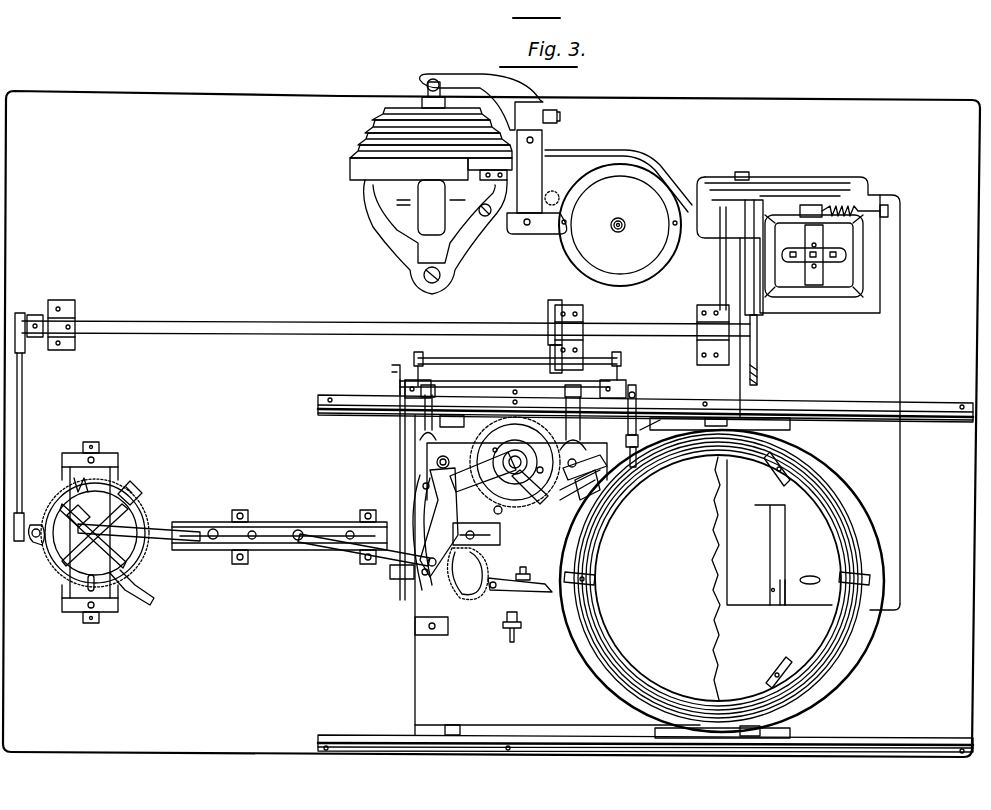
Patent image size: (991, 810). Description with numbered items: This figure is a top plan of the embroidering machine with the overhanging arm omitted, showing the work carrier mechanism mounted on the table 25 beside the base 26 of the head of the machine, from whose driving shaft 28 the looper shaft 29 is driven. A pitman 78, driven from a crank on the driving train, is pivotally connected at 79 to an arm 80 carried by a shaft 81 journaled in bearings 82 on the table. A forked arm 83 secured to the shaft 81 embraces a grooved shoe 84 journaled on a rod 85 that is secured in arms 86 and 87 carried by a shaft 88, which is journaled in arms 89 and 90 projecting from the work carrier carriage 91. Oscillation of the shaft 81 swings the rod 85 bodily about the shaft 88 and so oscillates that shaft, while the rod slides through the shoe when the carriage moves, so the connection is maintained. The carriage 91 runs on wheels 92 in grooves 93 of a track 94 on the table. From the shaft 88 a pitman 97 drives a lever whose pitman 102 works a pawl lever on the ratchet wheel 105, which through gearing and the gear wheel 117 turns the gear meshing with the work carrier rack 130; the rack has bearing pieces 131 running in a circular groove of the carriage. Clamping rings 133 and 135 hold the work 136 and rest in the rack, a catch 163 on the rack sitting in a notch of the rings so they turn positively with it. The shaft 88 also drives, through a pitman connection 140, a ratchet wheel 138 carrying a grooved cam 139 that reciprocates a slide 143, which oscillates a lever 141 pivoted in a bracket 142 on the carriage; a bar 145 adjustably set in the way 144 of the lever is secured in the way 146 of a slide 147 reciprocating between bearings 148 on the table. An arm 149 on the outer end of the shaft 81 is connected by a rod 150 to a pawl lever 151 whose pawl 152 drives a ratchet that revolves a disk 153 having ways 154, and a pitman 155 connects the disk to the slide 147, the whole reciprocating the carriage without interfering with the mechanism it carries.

The table 25 is at (491, 424).
The base of the head 26 is at (798, 297).
The driving shaft 28 is at (620, 225).
The looper shaft 29 is at (813, 285).
The pitman 78 is at (758, 365).
The pivot 79 is at (755, 322).
The arm 80 is at (735, 315).
The shaft 81 is at (225, 322).
The bearings 82 is at (62, 320).
The forked arm 83 is at (548, 350).
The shoe 84 is at (550, 368).
The rod 85 is at (448, 366).
The arm 86 is at (414, 360).
The arm 87 is at (625, 378).
The shaft 88 is at (505, 376).
The arm 89 is at (436, 399).
The arm 90 is at (578, 385).
The work carrier carriage 91 is at (830, 468).
The wheels 92 is at (810, 412).
The grooves 93 is at (855, 412).
The track 94 is at (918, 412).
The pitman 97 is at (640, 385).
The pitman 102 is at (595, 480).
The ratchet wheel 105 is at (517, 469).
The gear wheel 117 is at (585, 500).
The work carrier rack 130 is at (620, 668).
The bearing pieces 131 is at (590, 580).
The clamping ring 133 is at (597, 620).
The clamping ring 135 is at (660, 460).
The work 136 is at (714, 620).
The ratchet wheel 138 is at (450, 638).
The cam 139 is at (465, 598).
The pitman connection 140 is at (400, 436).
The lever 141 is at (420, 490).
The bracket 142 is at (502, 557).
The slide 143 is at (395, 578).
The way 144 is at (436, 520).
The bar 145 is at (392, 555).
The way 146 is at (265, 530).
The slide 147 is at (185, 545).
The bearings 148 is at (238, 510).
The arm 149 is at (35, 313).
The rod 150 is at (24, 385).
The pawl lever 151 is at (70, 517).
The pawl 152 is at (42, 545).
The disk 153 is at (80, 560).
The ways 154 is at (78, 515).
The pitman 155 is at (160, 530).
The catch 163 is at (835, 578).